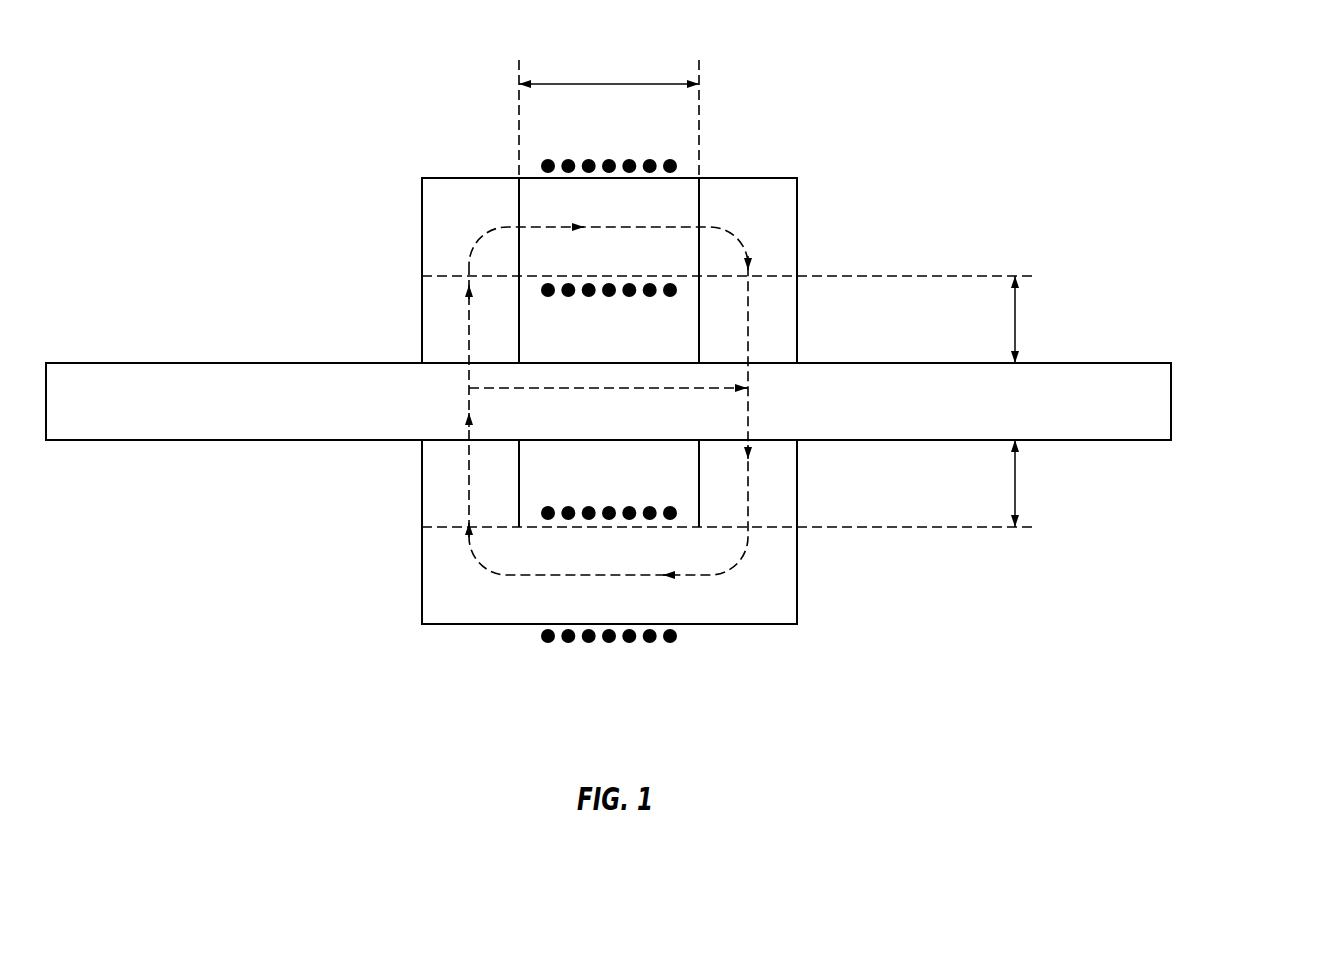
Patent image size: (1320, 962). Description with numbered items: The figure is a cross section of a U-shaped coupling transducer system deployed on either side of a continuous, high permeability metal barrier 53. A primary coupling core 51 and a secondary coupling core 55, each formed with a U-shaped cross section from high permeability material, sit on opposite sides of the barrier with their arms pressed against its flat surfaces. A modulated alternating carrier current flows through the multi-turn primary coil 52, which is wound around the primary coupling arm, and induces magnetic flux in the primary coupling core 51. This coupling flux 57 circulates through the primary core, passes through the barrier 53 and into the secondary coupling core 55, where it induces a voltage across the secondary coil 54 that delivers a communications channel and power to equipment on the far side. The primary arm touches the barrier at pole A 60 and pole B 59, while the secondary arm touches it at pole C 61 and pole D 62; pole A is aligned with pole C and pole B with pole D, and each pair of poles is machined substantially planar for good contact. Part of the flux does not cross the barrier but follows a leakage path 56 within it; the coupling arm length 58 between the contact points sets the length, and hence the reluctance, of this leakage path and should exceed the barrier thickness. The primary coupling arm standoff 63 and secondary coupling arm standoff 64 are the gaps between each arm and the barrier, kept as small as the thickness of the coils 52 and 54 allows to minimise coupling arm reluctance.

The primary coupling core 51 is at (443, 220).
The multi-turn primary coil 52 is at (683, 160).
The metal barrier 53 is at (608, 401).
The secondary coil 54 is at (595, 652).
The secondary coupling core 55 is at (440, 560).
The leakage path 56 is at (608, 407).
The magnetic flux 57 is at (608, 420).
The coupling arm length 58 is at (611, 96).
The pole B 59 is at (777, 360).
The pole A 60 is at (442, 360).
The pole C 61 is at (440, 443).
The pole D 62 is at (782, 442).
The primary coupling arm standoff 63 is at (853, 319).
The secondary coupling arm standoff 64 is at (851, 483).